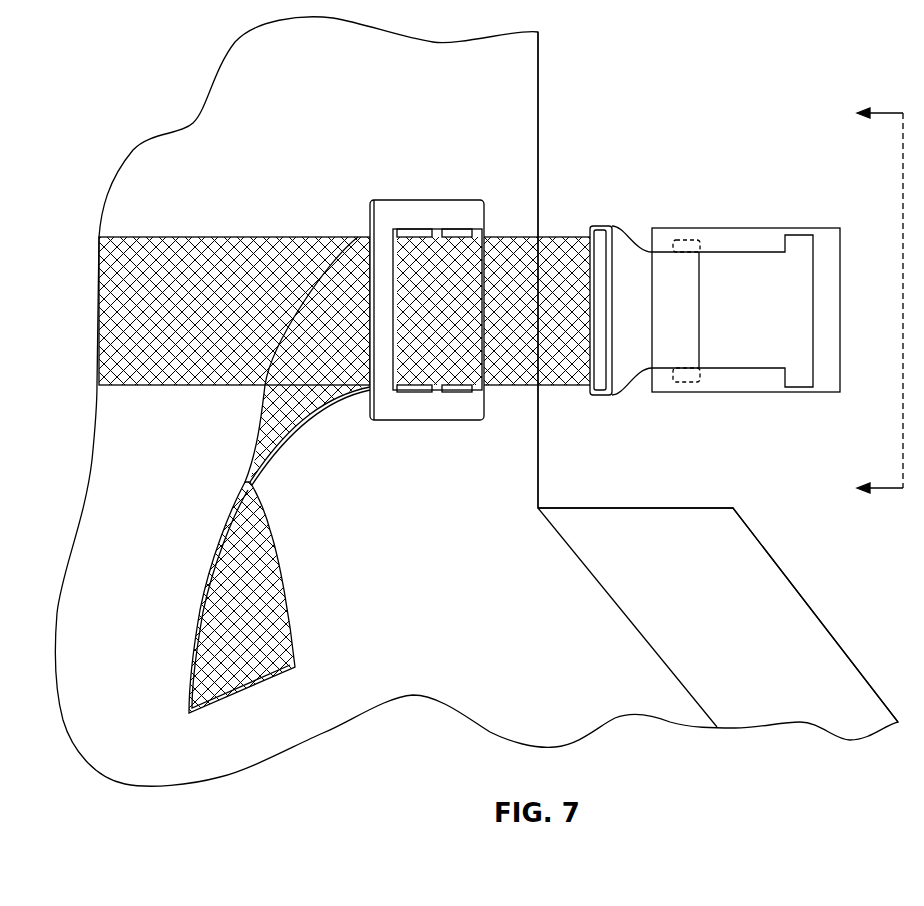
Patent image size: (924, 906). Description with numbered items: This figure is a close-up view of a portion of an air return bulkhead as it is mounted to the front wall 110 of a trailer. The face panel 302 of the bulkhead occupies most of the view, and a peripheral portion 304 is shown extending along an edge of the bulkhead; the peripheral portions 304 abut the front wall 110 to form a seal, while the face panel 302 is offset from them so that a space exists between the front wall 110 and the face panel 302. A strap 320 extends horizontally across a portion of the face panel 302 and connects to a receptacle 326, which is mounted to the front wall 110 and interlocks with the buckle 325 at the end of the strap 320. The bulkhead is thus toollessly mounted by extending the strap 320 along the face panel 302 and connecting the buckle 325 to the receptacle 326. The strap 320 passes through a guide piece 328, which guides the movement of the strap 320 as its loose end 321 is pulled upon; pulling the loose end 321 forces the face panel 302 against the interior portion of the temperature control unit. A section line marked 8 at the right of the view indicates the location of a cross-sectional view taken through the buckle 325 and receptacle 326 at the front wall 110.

The front wall 110 is at (588, 464).
The face panel 302 is at (266, 128).
The peripheral portion 304 is at (704, 624).
The strap 320 is at (117, 283).
The loose end 321 is at (238, 694).
The buckle 325 is at (625, 253).
The receptacle 326 is at (740, 240).
The guide piece 328 is at (390, 208).
The section line 8- 8 is at (869, 301).